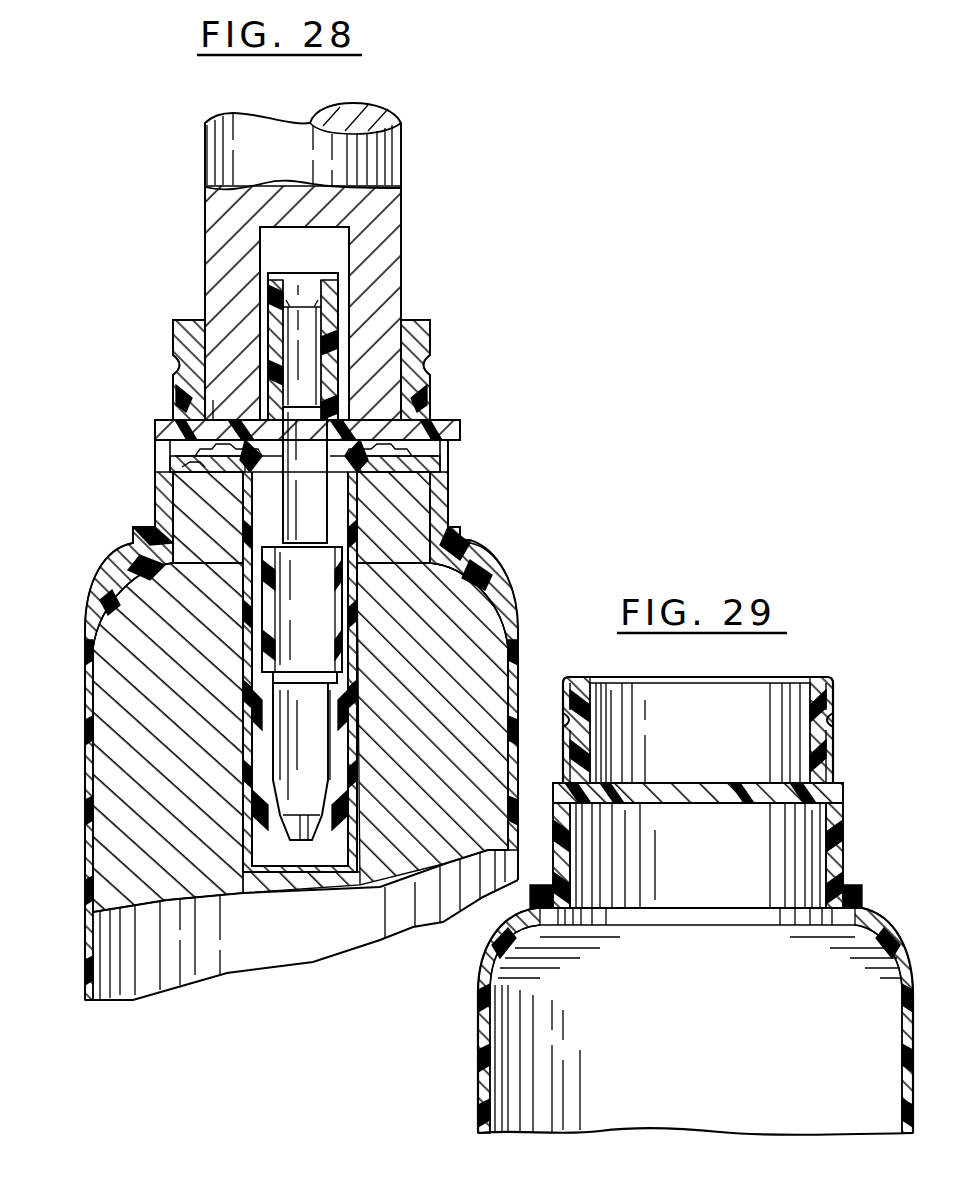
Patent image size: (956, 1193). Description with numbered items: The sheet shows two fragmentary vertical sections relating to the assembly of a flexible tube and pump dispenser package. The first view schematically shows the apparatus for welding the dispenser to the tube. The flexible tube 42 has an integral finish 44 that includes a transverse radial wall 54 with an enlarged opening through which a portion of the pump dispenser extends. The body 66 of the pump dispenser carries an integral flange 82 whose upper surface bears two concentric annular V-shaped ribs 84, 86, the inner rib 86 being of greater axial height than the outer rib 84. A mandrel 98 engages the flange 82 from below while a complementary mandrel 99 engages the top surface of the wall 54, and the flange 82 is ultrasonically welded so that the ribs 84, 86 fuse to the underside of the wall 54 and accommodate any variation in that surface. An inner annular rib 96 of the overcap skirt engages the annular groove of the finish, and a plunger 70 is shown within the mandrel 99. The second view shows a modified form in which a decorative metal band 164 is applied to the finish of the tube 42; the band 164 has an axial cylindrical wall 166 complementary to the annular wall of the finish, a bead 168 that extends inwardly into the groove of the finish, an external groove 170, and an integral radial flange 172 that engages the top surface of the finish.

In FIG. 28, the complementary mandrel 99 is at (403, 217).
In FIG. 28, the plunger 70 is at (343, 316).
In FIG. 28, the inner annular rib 96 is at (423, 363).
In FIG. 28, the transverse radial wall 54 is at (217, 420).
In FIG. 28, the annular V-shaped rib 86 is at (412, 430).
In FIG. 28, the integral flange 82 is at (190, 467).
In FIG. 28, the annular V-shaped rib 84 is at (373, 448).
In FIG. 28, the finish 44 is at (448, 506).
In FIG. 28, the flexible tube 42 is at (512, 590).
In FIG. 29, the flexible tube 42 is at (478, 1052).
In FIG. 28, the body 66 is at (250, 737).
In FIG. 28, the mandrel 98 is at (128, 788).
In FIG. 29, the decorative metal band 164 is at (817, 675).
In FIG. 29, the integral radial flange 172 is at (572, 675).
In FIG. 29, the external groove 170 is at (823, 727).
In FIG. 29, the bead 168 is at (575, 720).
In FIG. 29, the axial cylindrical wall 166 is at (830, 753).